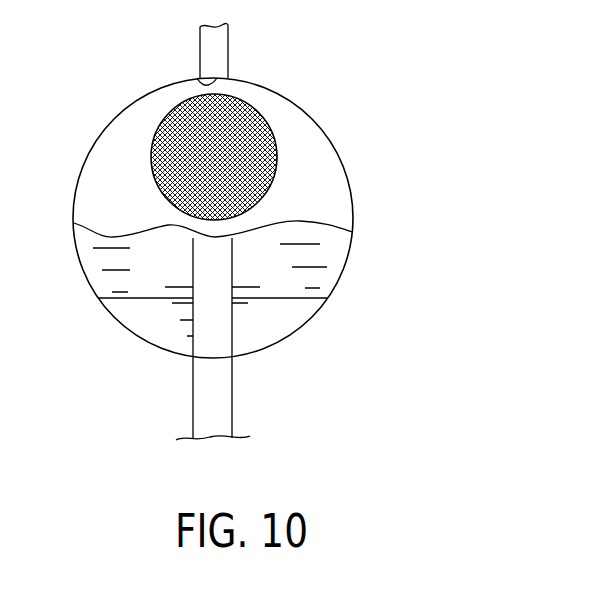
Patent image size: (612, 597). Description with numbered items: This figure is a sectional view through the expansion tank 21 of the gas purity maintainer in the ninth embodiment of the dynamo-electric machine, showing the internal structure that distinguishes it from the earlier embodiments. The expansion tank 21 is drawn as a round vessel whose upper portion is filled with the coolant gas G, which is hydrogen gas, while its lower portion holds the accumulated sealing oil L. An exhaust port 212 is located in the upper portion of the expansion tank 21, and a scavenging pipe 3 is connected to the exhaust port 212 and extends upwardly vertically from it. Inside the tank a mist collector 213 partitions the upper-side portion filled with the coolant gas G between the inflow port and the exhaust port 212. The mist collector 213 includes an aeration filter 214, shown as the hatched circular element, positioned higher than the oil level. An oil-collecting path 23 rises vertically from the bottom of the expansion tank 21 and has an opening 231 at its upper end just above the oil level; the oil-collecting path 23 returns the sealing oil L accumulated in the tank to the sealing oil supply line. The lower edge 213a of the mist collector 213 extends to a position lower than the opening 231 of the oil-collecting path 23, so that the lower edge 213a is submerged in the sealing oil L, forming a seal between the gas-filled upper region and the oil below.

The scavenging pipe 3 is at (229, 41).
The expansion tank 21 is at (87, 157).
The exhaust port 212 is at (197, 78).
The mist collector 213 is at (329, 148).
The lower edge 213a is at (292, 298).
The aeration filter 214 is at (259, 110).
The opening 231 is at (203, 242).
The oil-collecting path 23 is at (233, 397).
The coolant gas G is at (340, 199).
The sealing oil L is at (351, 259).